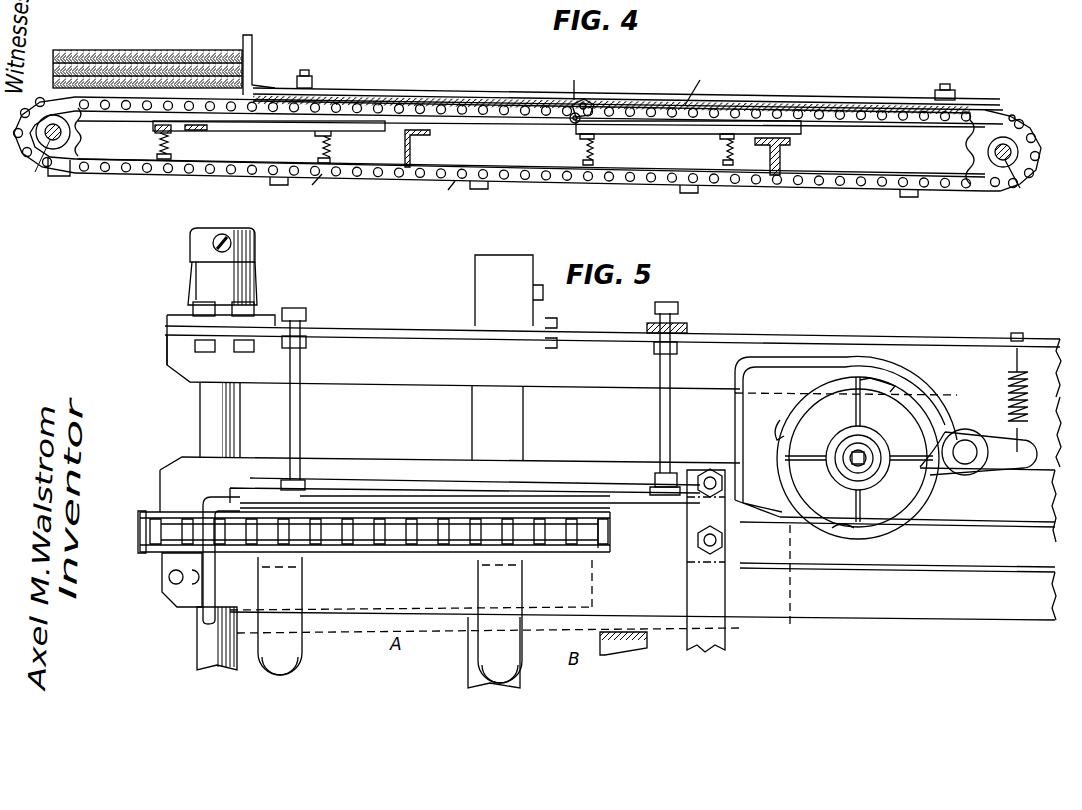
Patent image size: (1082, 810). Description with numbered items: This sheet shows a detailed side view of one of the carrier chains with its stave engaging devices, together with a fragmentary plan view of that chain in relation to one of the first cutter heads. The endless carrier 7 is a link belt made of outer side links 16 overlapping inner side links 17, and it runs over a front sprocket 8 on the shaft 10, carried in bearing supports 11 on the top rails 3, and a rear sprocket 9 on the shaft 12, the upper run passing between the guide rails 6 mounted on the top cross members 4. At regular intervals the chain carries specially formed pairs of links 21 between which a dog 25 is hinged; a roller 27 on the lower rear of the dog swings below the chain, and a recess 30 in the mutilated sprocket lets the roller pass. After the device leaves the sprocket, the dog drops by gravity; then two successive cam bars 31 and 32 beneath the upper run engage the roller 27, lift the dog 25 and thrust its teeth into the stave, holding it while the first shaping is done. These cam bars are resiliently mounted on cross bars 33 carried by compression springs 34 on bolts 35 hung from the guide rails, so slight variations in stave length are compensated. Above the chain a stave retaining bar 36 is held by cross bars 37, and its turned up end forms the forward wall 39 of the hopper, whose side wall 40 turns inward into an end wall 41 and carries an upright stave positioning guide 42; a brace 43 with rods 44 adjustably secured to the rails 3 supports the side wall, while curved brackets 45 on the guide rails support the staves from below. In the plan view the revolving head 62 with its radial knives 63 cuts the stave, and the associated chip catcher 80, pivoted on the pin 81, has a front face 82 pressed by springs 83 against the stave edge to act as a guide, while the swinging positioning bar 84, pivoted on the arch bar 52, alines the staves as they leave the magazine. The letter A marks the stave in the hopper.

In FIG. 5, the top rails 3 is at (375, 345).
In FIG. 5, the top cross members 4 is at (472, 425).
In FIG. 5, the guide rails 6 is at (350, 468).
In FIG. 4, the endless carriers 7 is at (446, 192).
In FIG. 5, the endless carriers 7 is at (140, 532).
In FIG. 4, the front sprocket 8 is at (92, 135).
In FIG. 4, the rear sprocket 9 is at (965, 150).
In FIG. 4, the shaft 10 is at (33, 163).
In FIG. 5, the shaft 10 is at (203, 410).
In FIG. 5, the bearing supports 11 is at (192, 282).
In FIG. 4, the shaft 12 is at (1021, 183).
In FIG. 4, the outer side links 16 is at (701, 83).
In FIG. 5, the outer side links 16 is at (395, 552).
In FIG. 4, the inner side links 17 is at (772, 184).
In FIG. 4, the links 21 is at (571, 81).
In FIG. 4, the dog 25 is at (588, 104).
In FIG. 4, the roller 27 is at (568, 121).
In FIG. 4, the sprocket recess 30 is at (1015, 118).
In FIG. 4, the cam bar 31 is at (235, 131).
In FIG. 4, the cam bar 32 is at (645, 131).
In FIG. 4, the cross bars 33 is at (155, 135).
In FIG. 4, the compression springs 34 is at (316, 150).
In FIG. 4, the bolts 35 is at (307, 187).
In FIG. 4, the stave retaining bar 36 is at (490, 93).
In FIG. 5, the stave retaining bar 36 is at (825, 565).
In FIG. 4, the cross bars 37 is at (312, 80).
In FIG. 5, the cross bars 37 is at (725, 592).
In FIG. 4, the forward wall 39 is at (253, 43).
In FIG. 5, the forward wall 39 is at (600, 558).
In FIG. 5, the side wall 40 is at (330, 470).
In FIG. 5, the end wall 41 is at (200, 605).
In FIG. 5, the stave positioning guide 42 is at (430, 500).
In FIG. 5, the brace 43 is at (532, 498).
In FIG. 5, the rods 44 is at (290, 440).
In FIG. 5, the brackets 45 is at (297, 655).
In FIG. 5, the arch bar 52 is at (690, 330).
In FIG. 5, the revolving head 62 is at (905, 403).
In FIG. 5, the knives 63 is at (866, 498).
In FIG. 5, the chip catcher 80 is at (778, 368).
In FIG. 5, the pin 81 is at (969, 462).
In FIG. 5, the front face 82 is at (800, 522).
In FIG. 5, the springs 83 is at (1030, 425).
In FIG. 5, the positioning bar 84 is at (615, 652).
In FIG. 4, the rail A is at (133, 58).